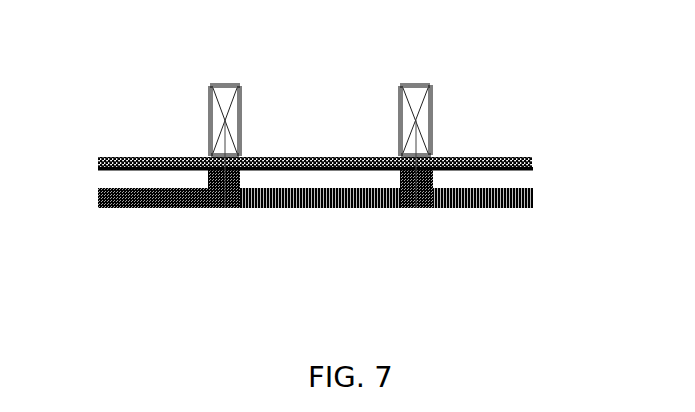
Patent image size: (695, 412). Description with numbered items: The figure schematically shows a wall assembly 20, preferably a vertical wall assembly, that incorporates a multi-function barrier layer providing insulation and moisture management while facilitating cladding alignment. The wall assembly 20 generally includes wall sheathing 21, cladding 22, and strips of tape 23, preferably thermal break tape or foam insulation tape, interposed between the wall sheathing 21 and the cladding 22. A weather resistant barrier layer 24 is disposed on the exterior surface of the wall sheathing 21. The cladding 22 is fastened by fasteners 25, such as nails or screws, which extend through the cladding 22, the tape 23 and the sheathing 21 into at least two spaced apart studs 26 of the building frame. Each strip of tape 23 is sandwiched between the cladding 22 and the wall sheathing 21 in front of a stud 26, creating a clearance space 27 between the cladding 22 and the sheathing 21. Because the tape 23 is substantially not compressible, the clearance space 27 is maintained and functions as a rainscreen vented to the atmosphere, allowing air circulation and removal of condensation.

The wall assembly 20 is at (108, 107).
The wall sheathing 21 is at (525, 155).
The cladding 22 is at (462, 212).
The strips of tape 23 is at (436, 180).
The weather resistant barrier layer 24 is at (535, 168).
The fasteners 25 is at (233, 210).
The studs 26 is at (436, 104).
The clearance space 27 is at (107, 178).